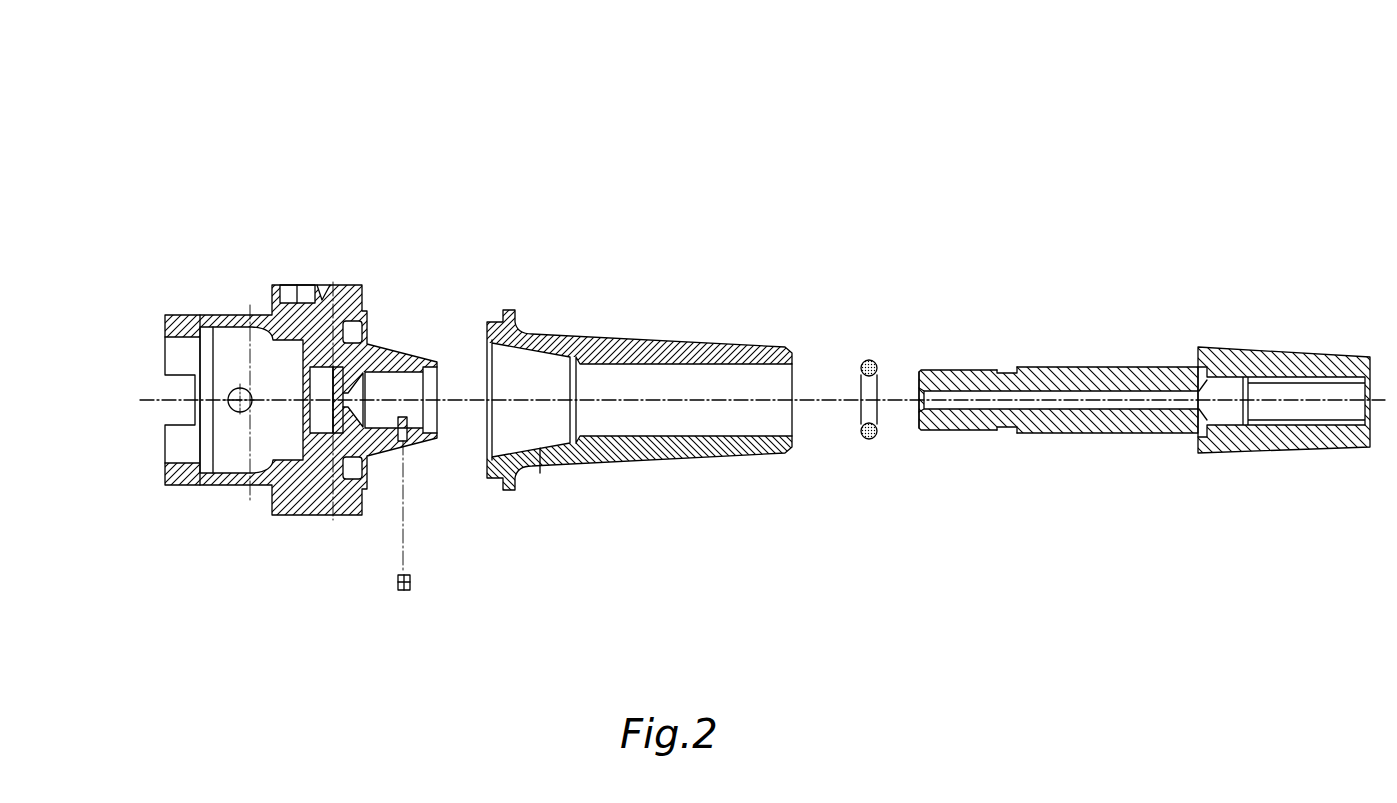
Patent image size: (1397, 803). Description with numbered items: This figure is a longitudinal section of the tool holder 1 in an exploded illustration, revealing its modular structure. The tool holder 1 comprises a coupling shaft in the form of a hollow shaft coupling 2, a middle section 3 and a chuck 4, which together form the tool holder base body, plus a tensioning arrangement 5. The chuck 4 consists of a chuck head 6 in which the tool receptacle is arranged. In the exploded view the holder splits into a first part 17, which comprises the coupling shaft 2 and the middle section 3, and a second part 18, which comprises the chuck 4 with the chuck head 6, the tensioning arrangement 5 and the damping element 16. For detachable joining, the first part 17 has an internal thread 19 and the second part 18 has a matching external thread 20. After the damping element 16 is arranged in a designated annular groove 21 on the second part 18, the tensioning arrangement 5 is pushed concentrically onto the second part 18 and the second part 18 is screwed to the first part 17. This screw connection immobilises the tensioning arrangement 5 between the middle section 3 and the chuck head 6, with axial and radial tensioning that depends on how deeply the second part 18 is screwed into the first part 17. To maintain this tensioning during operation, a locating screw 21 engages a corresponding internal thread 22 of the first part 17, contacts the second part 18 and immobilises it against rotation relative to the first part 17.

The tool holder 1 is at (699, 114).
The hollow shaft coupling 2 is at (188, 316).
The middle section 3 is at (318, 294).
The chuck 4 is at (1086, 374).
The tensioning arrangement 5 is at (626, 344).
The chuck head 6 is at (1235, 358).
The damping element 16 is at (867, 440).
The first part 17 is at (234, 558).
The second part 18 is at (1083, 524).
The internal thread 19 is at (383, 376).
The external thread 20 is at (936, 366).
The locating screw 21 is at (1011, 366).
The internal thread 22 is at (406, 444).